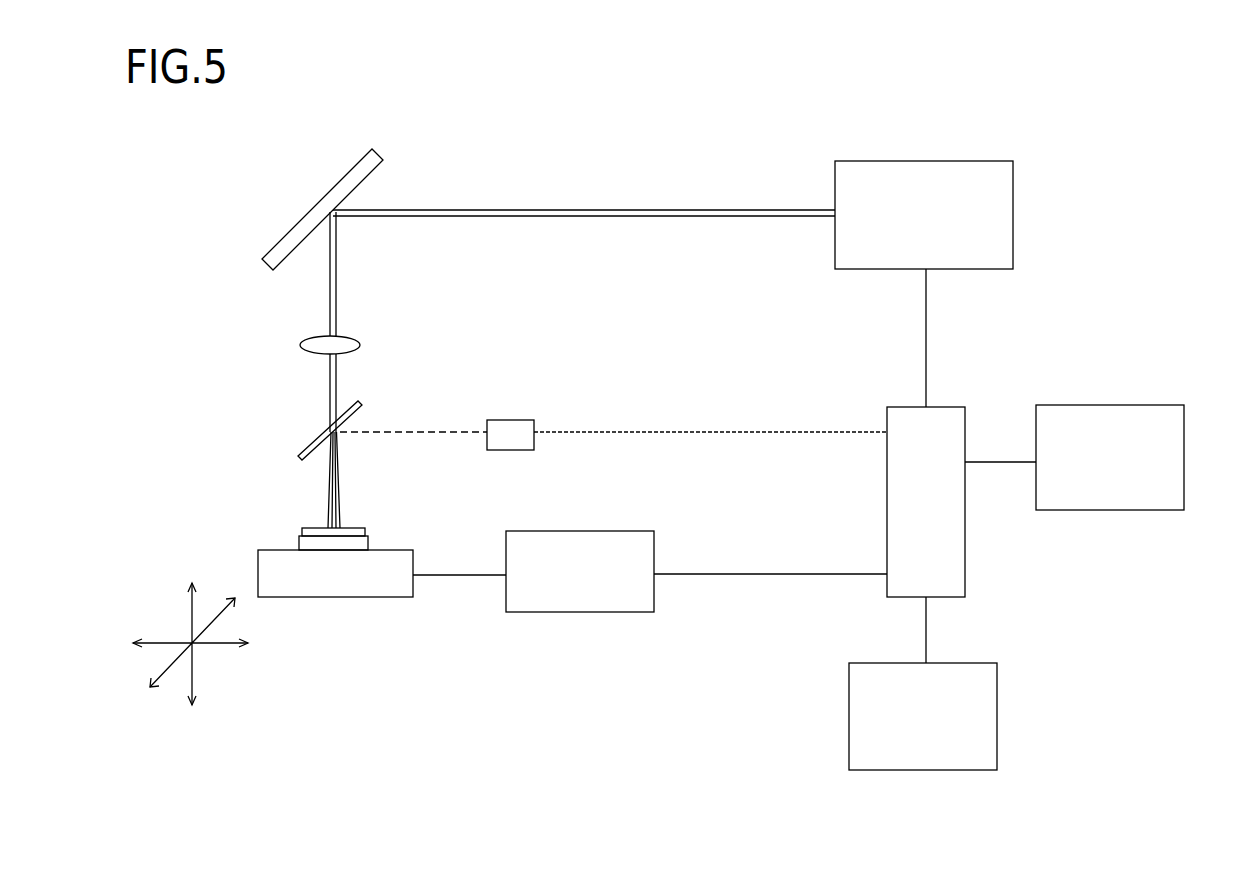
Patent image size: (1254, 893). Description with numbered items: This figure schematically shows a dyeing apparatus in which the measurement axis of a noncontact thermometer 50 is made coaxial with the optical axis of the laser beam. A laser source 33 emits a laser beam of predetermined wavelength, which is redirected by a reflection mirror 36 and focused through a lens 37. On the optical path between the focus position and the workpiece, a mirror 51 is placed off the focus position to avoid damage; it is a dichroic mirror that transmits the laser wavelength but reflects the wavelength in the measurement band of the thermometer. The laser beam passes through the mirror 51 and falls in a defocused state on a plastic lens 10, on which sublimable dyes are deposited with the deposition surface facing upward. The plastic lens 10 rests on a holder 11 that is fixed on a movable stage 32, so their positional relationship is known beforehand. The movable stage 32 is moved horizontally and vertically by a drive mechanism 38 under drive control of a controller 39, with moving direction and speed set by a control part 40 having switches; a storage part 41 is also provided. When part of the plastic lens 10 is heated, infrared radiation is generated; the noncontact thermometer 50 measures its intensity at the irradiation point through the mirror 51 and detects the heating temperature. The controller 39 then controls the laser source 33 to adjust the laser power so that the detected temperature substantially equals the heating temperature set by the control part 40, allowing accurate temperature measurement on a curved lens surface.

The plastic lens 10 is at (347, 517).
The holder 11 is at (373, 547).
The movable stage 32 is at (340, 583).
The laser source 33 is at (960, 178).
The reflection mirror 36 is at (325, 203).
The lens 37 is at (360, 342).
The drive mechanism 38 is at (606, 545).
The controller 39 is at (908, 498).
The control part 40 is at (1135, 422).
The storage part 41 is at (968, 680).
The noncontact thermometer 50 is at (512, 413).
The mirror 51 is at (318, 432).